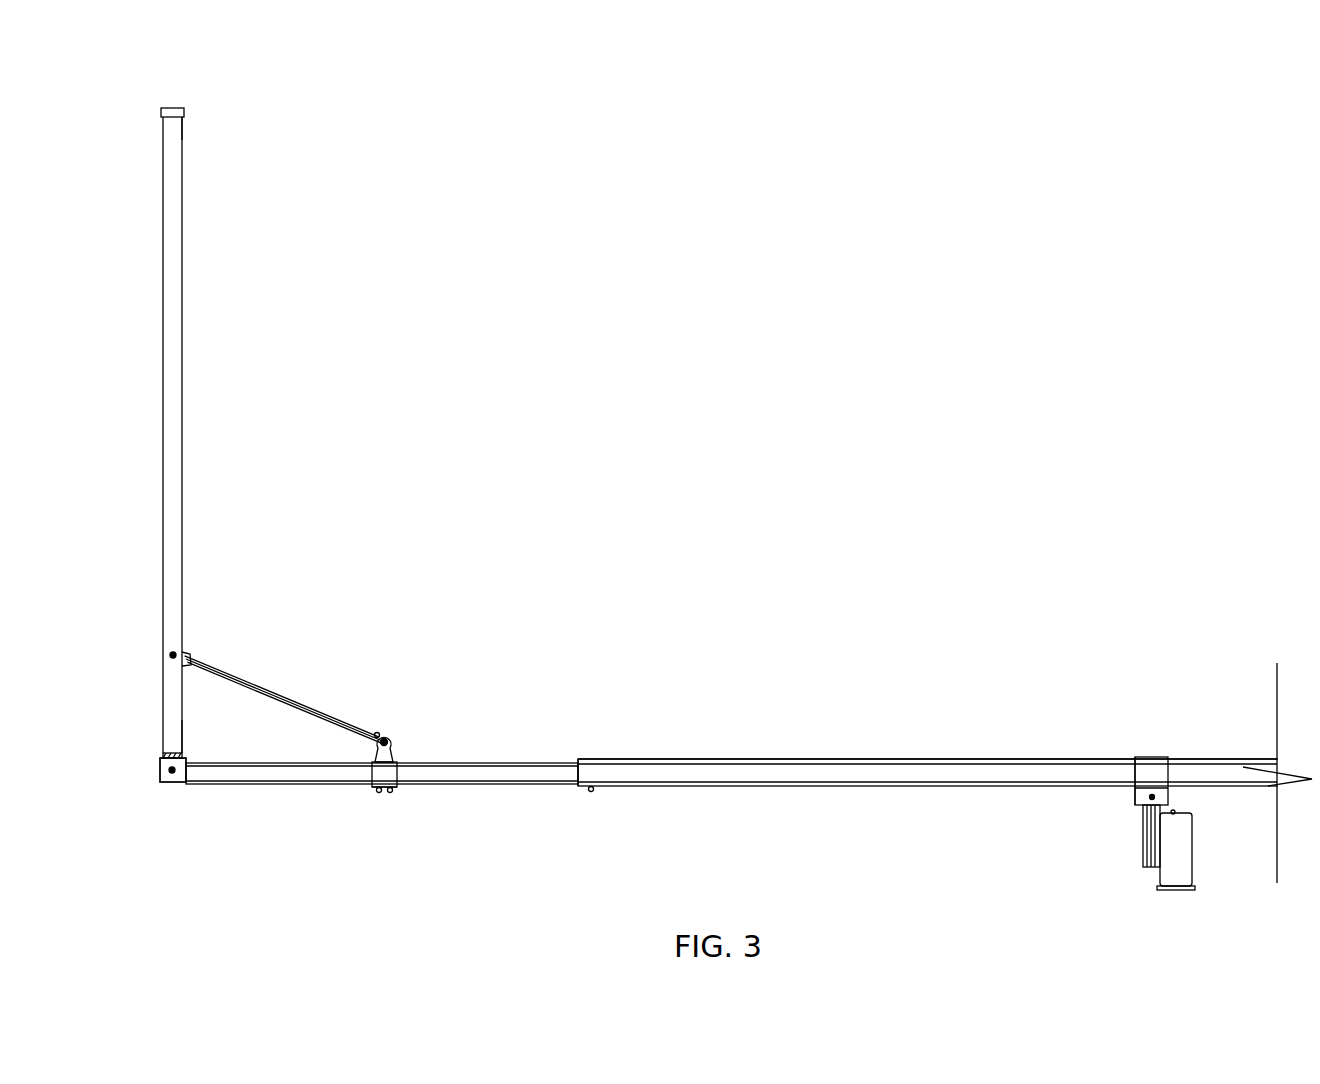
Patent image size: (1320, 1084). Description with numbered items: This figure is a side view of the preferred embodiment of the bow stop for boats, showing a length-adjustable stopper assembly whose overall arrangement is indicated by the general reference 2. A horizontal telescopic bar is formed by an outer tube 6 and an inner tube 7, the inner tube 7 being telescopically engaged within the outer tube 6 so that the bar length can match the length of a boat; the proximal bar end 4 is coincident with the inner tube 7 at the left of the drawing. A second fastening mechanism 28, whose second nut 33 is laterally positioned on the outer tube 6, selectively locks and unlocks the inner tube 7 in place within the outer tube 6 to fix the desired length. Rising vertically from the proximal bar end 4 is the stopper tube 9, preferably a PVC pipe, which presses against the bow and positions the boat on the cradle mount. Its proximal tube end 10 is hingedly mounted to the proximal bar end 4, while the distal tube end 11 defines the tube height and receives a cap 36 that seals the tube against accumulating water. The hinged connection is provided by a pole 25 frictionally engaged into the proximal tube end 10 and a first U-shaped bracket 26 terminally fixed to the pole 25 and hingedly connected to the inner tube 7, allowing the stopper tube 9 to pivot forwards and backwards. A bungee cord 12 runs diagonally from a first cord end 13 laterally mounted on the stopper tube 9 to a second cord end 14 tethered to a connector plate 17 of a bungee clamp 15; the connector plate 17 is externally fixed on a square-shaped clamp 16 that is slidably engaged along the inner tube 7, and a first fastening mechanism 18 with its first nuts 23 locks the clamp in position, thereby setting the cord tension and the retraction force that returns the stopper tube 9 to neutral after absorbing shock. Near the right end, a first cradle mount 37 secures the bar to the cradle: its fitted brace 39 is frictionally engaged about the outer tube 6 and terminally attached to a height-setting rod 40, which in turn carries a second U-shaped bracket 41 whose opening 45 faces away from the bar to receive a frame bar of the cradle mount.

The gate assembly 2 is at (614, 738).
The proximal bar end 4 is at (174, 790).
The outer tube 6 is at (708, 787).
The inner tube 7 is at (282, 786).
The stopper tube 9 is at (184, 340).
The proximal tube end 10 is at (192, 750).
The distal tube end 11 is at (184, 124).
The bungee cord 12 is at (291, 696).
The first cord end 13 is at (190, 650).
The second cord end 14 is at (376, 730).
The bungee clamp 15 is at (405, 752).
The square-shaped clamp 16 is at (397, 775).
The connector plate 17 is at (372, 748).
The first fastening mechanism 18 is at (385, 800).
The first nut 23 is at (378, 793).
The pole 25 is at (163, 755).
The first U-shaped bracket 26 is at (160, 770).
The second fastening mechanism 28 is at (592, 808).
The second nut 33 is at (591, 794).
The cap 36 is at (170, 108).
The first cradle mount 37 is at (1153, 755).
The fitted brace 39 is at (1136, 758).
The height-setting rod 40 is at (1145, 862).
The second U-shaped bracket 41 is at (1160, 883).
The opening 45 is at (1176, 897).